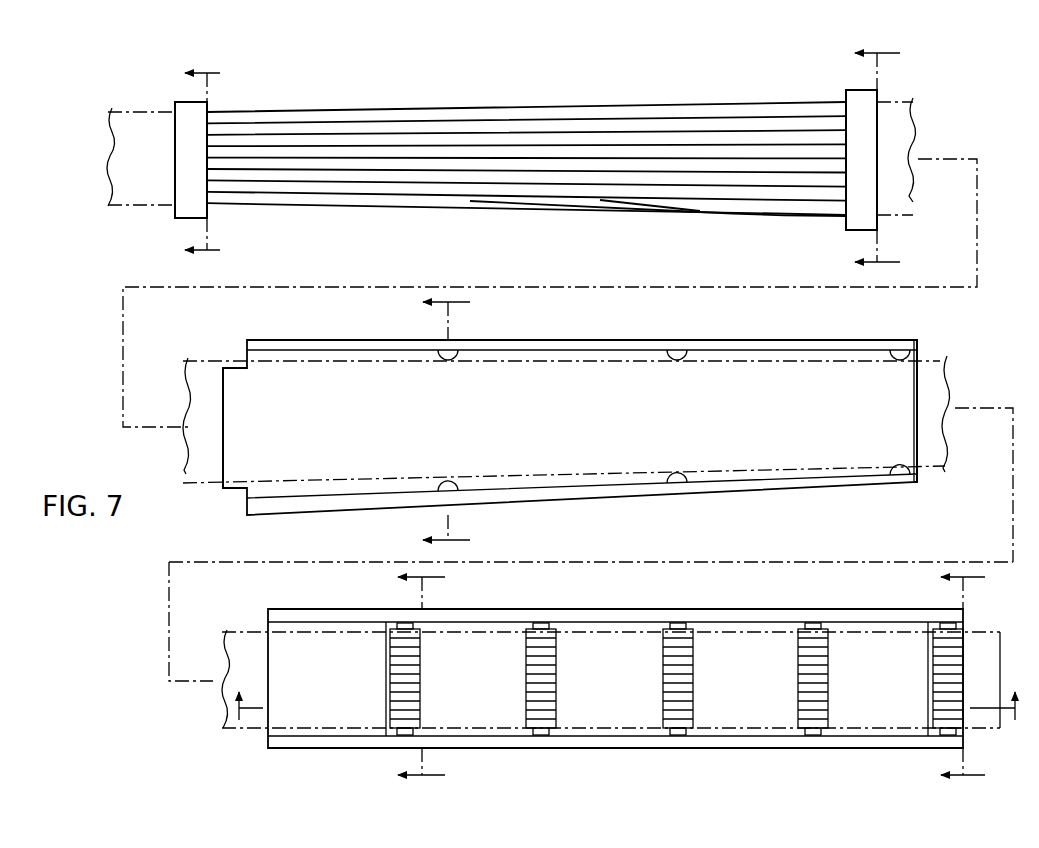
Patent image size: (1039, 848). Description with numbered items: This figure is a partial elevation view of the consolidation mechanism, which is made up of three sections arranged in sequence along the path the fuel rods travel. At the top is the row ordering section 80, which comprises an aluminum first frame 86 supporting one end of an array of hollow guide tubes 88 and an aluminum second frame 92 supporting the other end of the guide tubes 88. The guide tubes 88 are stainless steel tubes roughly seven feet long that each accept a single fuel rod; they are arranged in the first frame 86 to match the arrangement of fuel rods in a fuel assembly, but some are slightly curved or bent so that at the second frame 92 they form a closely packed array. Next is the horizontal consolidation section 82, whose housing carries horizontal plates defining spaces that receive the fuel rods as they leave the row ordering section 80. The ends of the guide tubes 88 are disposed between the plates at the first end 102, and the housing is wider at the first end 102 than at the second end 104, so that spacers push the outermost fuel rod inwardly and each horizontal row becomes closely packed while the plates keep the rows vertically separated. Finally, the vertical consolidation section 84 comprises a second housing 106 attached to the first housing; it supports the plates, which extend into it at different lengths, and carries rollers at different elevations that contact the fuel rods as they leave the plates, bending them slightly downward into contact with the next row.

The row ordering section 80 is at (508, 100).
The horizontal consolidation section 82 is at (762, 498).
The vertical consolidation section 84 is at (728, 750).
The first frame 86 is at (186, 109).
The guide tubes 88 is at (651, 108).
The second frame 92 is at (862, 100).
The first end 102 is at (228, 490).
The second end 104 is at (906, 483).
The second housing 106 is at (840, 742).